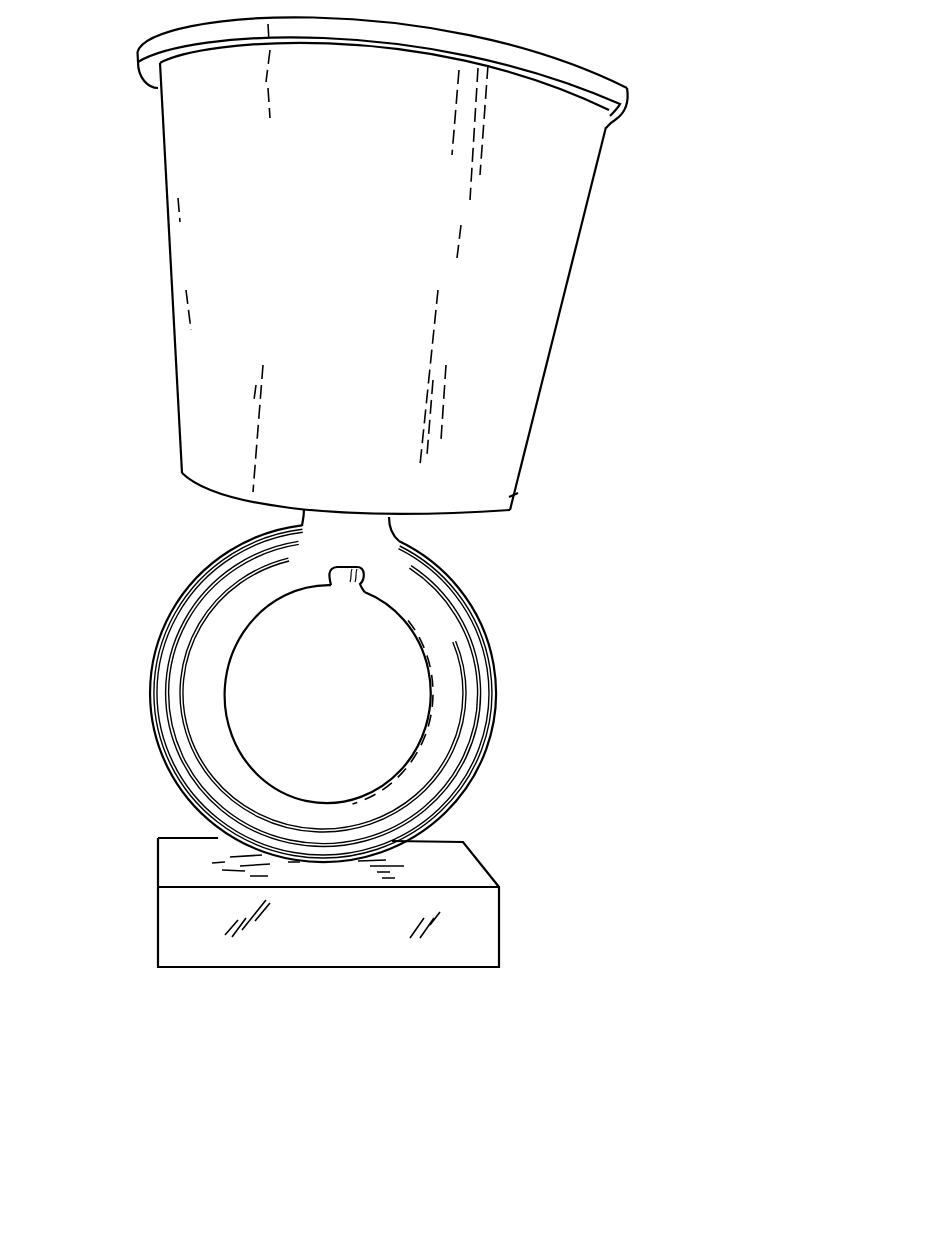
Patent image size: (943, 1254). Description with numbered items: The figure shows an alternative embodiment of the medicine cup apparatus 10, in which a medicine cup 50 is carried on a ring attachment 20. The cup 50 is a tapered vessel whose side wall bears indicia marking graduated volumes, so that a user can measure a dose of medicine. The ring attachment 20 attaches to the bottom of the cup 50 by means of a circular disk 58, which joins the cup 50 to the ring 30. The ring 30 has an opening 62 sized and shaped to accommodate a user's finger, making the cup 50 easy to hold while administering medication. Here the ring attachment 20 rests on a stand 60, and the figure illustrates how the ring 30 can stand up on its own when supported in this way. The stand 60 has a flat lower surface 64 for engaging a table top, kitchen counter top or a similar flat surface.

The medicine cup apparatus 10 is at (73, 224).
The ring attachment 20 is at (243, 519).
The ring 30 is at (450, 646).
The cup 50 is at (553, 187).
The circular disk 58 is at (395, 522).
The stand 60 is at (437, 902).
The opening 62 is at (329, 685).
The flat lower surface 64 is at (145, 958).